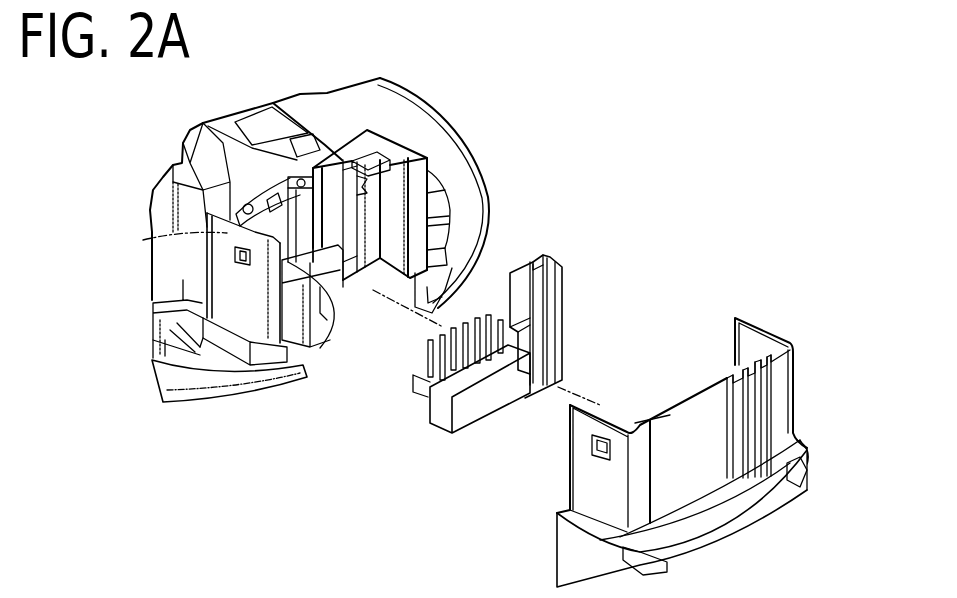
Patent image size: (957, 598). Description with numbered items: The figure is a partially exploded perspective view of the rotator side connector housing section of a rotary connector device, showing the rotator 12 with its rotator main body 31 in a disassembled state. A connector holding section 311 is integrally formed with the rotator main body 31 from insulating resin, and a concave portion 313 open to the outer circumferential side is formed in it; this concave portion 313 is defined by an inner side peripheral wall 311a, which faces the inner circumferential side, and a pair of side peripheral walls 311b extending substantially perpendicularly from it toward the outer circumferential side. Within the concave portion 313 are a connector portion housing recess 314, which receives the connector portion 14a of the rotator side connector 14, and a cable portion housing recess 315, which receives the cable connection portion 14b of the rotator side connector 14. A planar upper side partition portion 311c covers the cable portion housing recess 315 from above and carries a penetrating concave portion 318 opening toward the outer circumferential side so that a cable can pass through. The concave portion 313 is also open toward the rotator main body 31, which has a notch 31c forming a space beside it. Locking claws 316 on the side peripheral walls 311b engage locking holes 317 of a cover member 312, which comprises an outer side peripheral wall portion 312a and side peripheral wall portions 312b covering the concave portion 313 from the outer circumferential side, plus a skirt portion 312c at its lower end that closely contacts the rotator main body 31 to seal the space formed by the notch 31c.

The rotator 12 is at (656, 131).
The rotator side connector 14 is at (586, 291).
The connector portion 14a is at (473, 407).
The cable connection portion 14b is at (562, 355).
The rotator main body 31 is at (462, 172).
The notch 31c is at (346, 336).
The connector holding section 311 is at (433, 170).
The inner side peripheral wall 311a is at (263, 187).
The side peripheral walls 311b is at (420, 193).
The upper side partition portion 311c is at (377, 155).
The cover member 312 is at (769, 304).
The outer side peripheral wall portion 312a is at (700, 462).
The side peripheral wall portions 312b is at (780, 337).
The skirt portion 312c is at (775, 518).
The concave portion 313 is at (340, 444).
The connector portion housing recess 314 is at (308, 285).
The cable portion housing recess 315 is at (390, 237).
The locking claws 316 is at (233, 252).
The locking holes 317 is at (592, 447).
The penetrating concave portion 318 is at (351, 158).